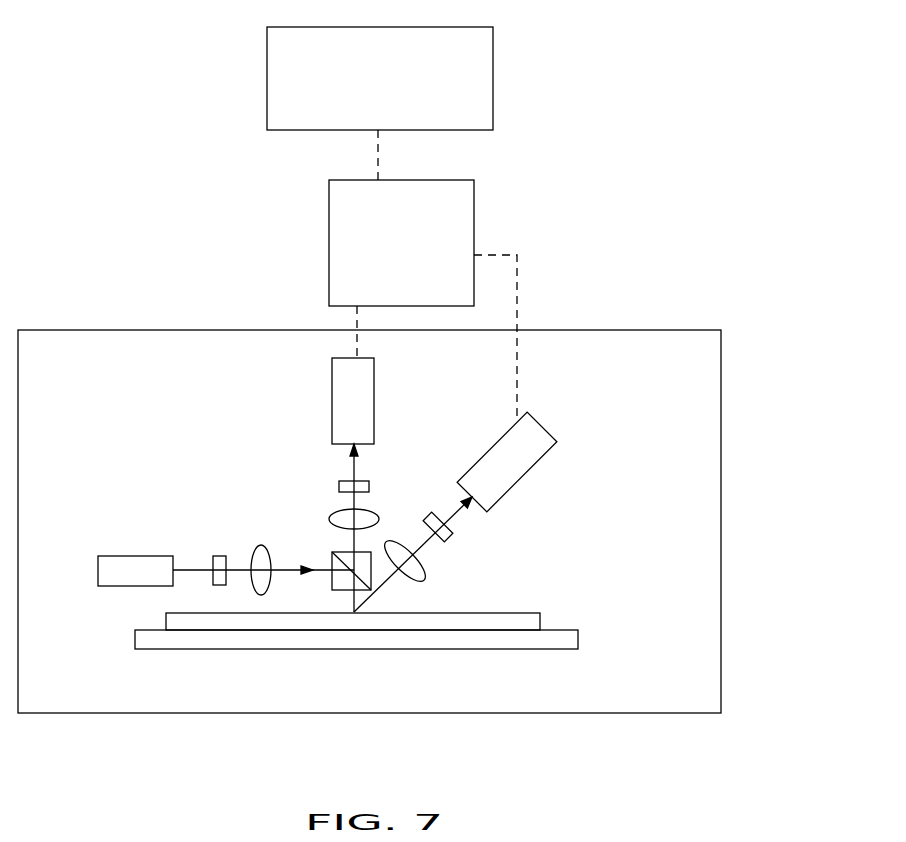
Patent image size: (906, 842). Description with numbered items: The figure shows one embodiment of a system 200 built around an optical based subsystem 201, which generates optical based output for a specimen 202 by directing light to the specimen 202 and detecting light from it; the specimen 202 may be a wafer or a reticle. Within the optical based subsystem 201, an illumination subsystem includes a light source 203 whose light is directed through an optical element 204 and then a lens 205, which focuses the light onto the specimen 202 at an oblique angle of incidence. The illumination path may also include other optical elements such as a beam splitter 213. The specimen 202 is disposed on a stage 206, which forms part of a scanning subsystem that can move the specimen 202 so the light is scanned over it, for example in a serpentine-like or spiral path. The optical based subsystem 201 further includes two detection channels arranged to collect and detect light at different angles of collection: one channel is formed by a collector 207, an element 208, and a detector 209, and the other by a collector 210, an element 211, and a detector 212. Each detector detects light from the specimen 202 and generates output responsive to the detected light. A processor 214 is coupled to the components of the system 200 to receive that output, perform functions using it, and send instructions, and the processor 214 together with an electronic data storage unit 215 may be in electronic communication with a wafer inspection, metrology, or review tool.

The system 200 is at (157, 100).
The optical based subsystem 201 is at (723, 348).
The specimen 202 is at (166, 616).
The light source 203 is at (106, 556).
The optical element 204 is at (221, 556).
The lens 205 is at (258, 546).
The stage 206 is at (135, 642).
The collector 207 is at (336, 514).
The element 208 is at (339, 484).
The detector 209 is at (332, 402).
The collector 210 is at (423, 578).
The element 211 is at (449, 538).
The detector 212 is at (541, 462).
The beam splitter 213 is at (341, 553).
The processor 214 is at (423, 254).
The electronic data storage unit 215 is at (380, 78).